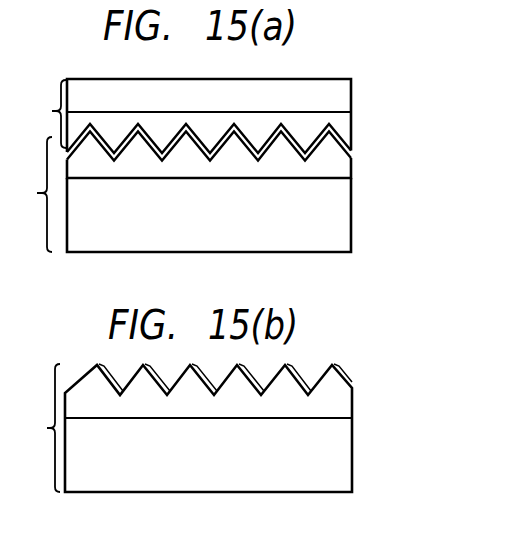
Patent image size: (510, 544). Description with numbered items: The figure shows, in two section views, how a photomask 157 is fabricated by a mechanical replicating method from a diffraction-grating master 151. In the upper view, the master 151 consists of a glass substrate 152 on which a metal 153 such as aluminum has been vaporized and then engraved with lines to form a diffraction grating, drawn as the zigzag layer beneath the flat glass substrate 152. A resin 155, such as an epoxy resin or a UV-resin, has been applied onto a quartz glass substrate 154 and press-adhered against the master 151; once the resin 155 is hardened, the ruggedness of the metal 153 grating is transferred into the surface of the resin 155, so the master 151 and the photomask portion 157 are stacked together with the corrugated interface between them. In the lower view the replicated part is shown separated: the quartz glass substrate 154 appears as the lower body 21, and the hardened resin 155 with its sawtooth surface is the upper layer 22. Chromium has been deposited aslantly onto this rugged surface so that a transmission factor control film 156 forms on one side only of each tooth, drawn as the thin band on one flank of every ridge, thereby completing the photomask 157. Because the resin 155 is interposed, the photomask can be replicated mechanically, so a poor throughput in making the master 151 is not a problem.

In FIG. 15A, the master 151 is at (39, 114).
In FIG. 15A, the glass substrate 152 is at (345, 94).
In FIG. 15A, the metal 153 is at (345, 130).
In FIG. 15A, the quartz glass substrate 154 is at (345, 226).
In FIG. 15A, the resin 155 is at (345, 173).
In FIG. 15B, the transmission factor control film 156 is at (342, 375).
In FIG. 15A, the photomask 157 is at (26, 194).
In FIG. 15B, the photomask 157 is at (35, 428).
In FIG. 15B, the substrate 21 is at (343, 476).
In FIG. 15B, the sawtooth surface layer 22 is at (343, 410).